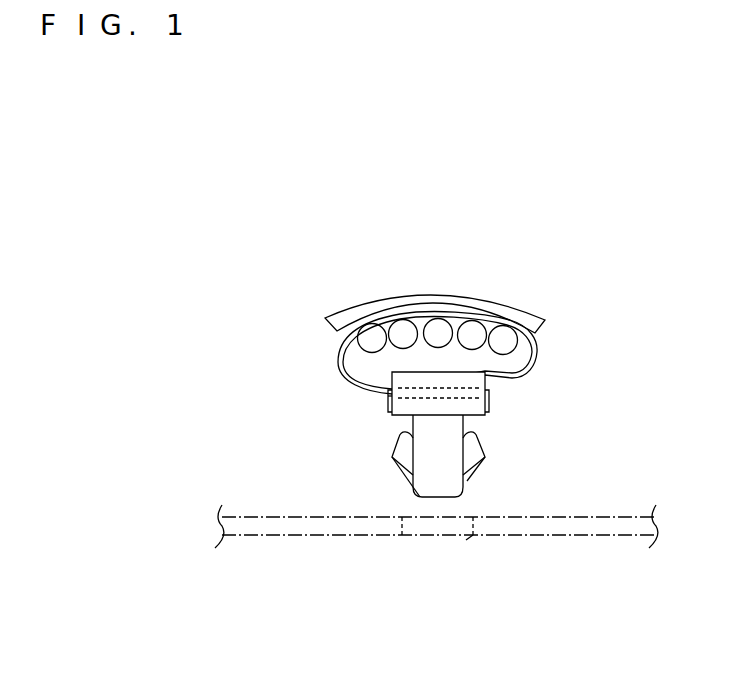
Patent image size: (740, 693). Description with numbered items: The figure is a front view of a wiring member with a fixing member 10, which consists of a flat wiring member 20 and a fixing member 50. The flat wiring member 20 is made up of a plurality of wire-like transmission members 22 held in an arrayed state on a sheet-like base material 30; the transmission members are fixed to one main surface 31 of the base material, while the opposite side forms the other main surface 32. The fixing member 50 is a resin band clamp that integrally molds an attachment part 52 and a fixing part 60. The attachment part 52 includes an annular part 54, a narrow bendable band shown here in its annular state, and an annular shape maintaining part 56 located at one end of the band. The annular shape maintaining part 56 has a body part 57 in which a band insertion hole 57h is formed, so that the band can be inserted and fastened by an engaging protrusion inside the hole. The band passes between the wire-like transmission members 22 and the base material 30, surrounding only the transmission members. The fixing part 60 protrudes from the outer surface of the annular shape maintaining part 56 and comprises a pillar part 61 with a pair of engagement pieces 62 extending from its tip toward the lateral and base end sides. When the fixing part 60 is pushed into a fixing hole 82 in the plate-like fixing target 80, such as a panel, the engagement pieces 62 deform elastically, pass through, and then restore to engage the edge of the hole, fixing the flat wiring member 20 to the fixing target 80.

The wiring member with a fixing member 10 is at (261, 206).
The flat wiring member 20 is at (494, 246).
The wire-like transmission members 22 is at (505, 318).
The base material 30 is at (432, 294).
The main surface 31 is at (338, 344).
The main surface 32 is at (336, 321).
The fixing member 50 is at (488, 481).
The attachment part 52 is at (570, 378).
The annular part 54 is at (522, 380).
The annular shape maintaining part 56 is at (497, 410).
The body part 57 is at (388, 410).
The band insertion hole 57h is at (388, 392).
The fixing part 60 is at (336, 448).
The pillar part 61 is at (433, 489).
The engagement pieces 62 is at (473, 458).
The fixing target 80 is at (545, 537).
The fixing hole 82 is at (466, 539).